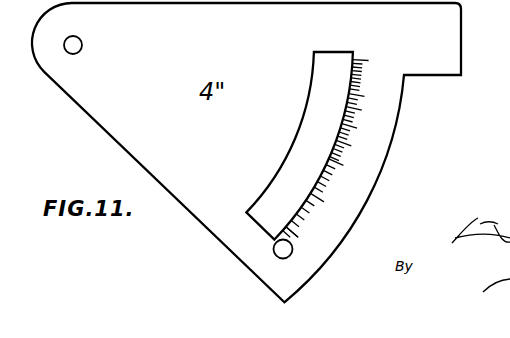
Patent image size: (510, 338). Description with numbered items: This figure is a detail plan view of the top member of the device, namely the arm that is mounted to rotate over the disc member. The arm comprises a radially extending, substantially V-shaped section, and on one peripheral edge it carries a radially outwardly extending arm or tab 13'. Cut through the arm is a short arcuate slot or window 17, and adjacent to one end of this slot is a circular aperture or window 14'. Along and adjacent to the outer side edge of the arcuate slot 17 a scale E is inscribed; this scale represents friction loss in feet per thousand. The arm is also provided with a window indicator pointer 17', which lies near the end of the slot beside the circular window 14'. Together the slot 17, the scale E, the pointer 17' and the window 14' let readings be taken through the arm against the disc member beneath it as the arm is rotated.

The arm or tab 13' is at (271, 152).
The arcuate slot or window 17 is at (296, 146).
The window indicator pointer 17' is at (325, 256).
The circular aperture or window 14' is at (305, 280).
The scale E is at (352, 159).